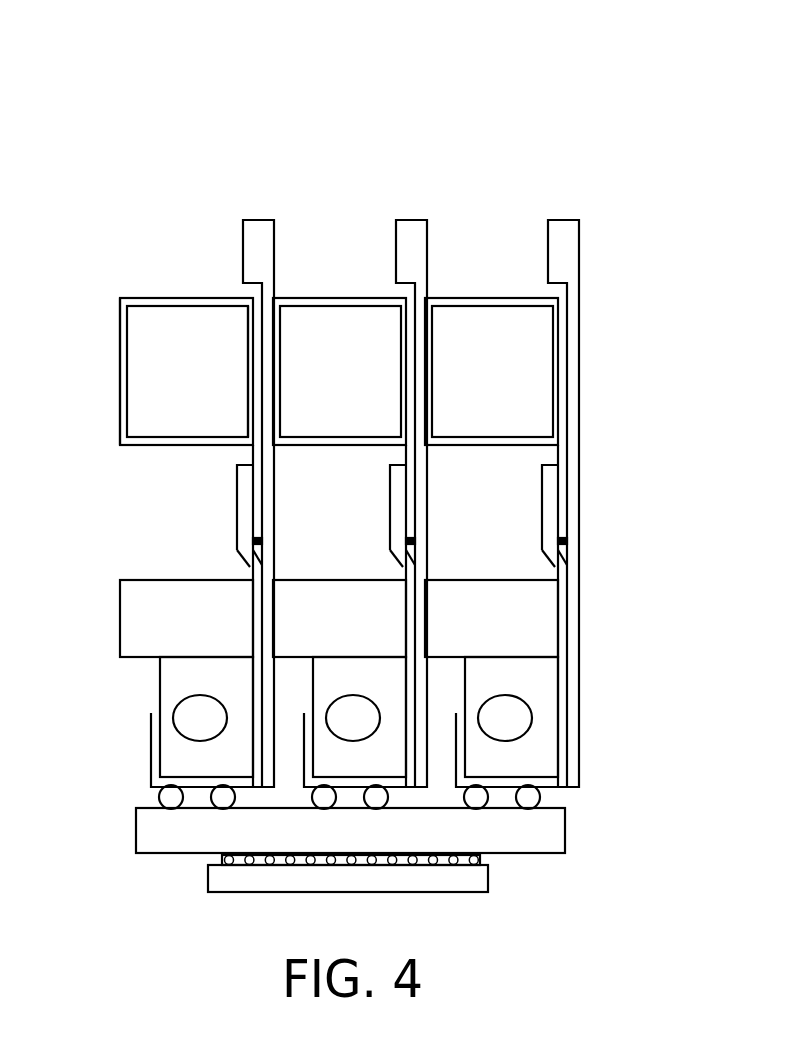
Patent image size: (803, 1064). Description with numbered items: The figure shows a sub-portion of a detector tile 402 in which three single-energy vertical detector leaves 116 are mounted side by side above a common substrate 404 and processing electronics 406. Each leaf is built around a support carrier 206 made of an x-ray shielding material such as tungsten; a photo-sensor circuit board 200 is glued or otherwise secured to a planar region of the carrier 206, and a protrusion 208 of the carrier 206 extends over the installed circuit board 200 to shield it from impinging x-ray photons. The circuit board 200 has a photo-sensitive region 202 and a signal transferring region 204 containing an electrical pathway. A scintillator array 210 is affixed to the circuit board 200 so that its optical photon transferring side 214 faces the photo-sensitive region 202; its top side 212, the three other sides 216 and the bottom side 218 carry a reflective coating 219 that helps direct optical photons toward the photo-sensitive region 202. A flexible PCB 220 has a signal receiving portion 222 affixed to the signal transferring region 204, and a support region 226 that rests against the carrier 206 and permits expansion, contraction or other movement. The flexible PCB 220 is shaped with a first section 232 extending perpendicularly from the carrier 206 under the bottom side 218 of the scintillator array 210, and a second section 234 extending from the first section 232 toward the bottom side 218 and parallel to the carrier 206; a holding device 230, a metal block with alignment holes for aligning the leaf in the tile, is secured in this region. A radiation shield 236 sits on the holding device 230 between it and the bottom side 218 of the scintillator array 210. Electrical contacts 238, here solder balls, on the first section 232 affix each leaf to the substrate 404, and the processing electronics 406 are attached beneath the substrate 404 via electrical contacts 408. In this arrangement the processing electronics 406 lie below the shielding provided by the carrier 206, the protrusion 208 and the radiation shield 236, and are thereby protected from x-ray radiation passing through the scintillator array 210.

The detector tile 402 is at (137, 93).
The semiconductor device module 116 is at (138, 262).
The protrusion 208 is at (243, 218).
The photo-sensor circuit board 200 is at (398, 293).
The top side 212 is at (493, 297).
The other sides 216 is at (127, 365).
The reflective coating 219 is at (120, 403).
The scintillator array 210 is at (210, 380).
The optical photon transferring side 214 is at (248, 392).
The photo-sensitive region 202 is at (402, 392).
The signal receiving portion 222 is at (242, 517).
The flexible PCB 220 is at (250, 570).
The signal transferring region 204 is at (396, 517).
The bottom side 218 is at (492, 447).
The support carrier 206 is at (580, 522).
The radiation shield 236 is at (135, 625).
The holding device 230 is at (550, 680).
The second section 234 is at (150, 741).
The support region 226 is at (563, 717).
The electrical contacts 238 is at (160, 800).
The first section 232 is at (548, 787).
The substrate 404 is at (133, 828).
The electrical contacts 408 is at (220, 860).
The processing electronics 406 is at (488, 880).